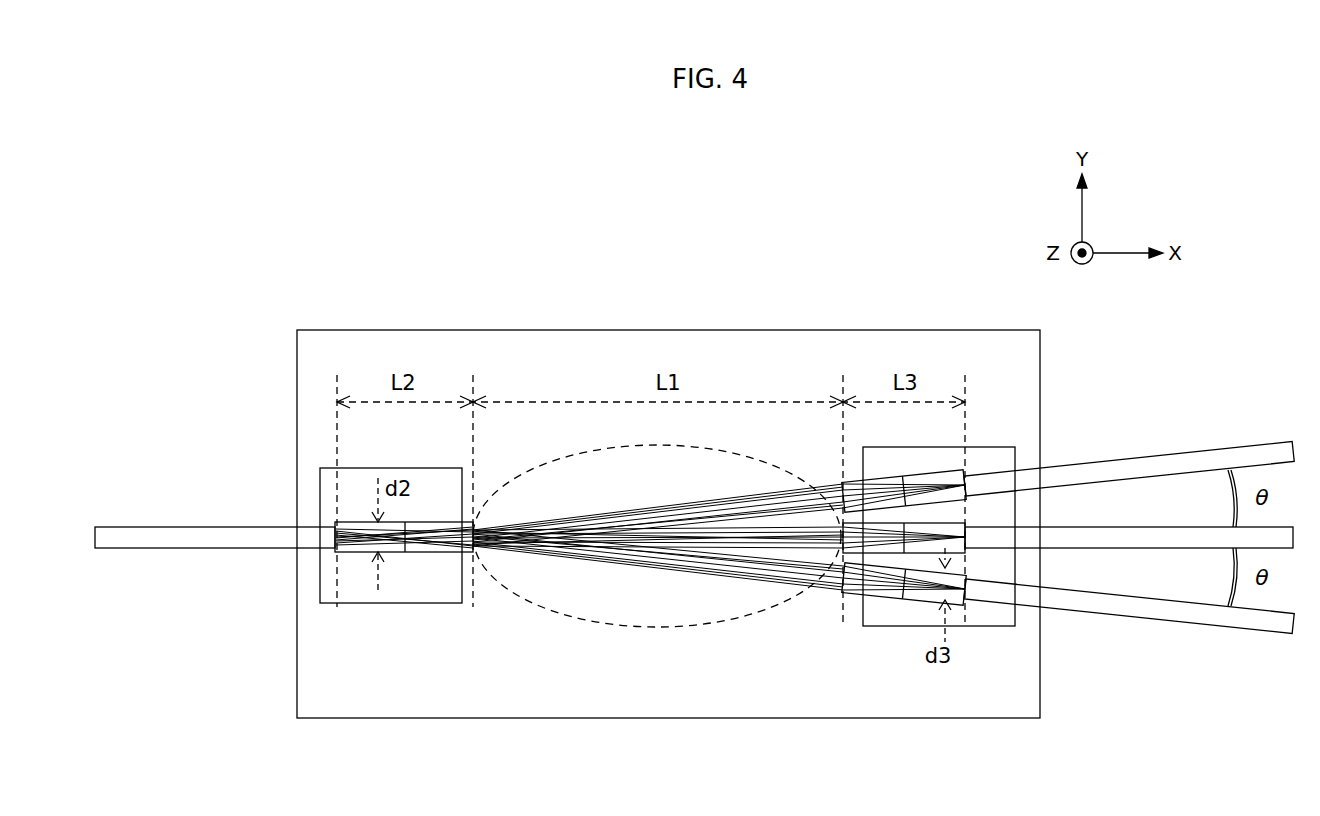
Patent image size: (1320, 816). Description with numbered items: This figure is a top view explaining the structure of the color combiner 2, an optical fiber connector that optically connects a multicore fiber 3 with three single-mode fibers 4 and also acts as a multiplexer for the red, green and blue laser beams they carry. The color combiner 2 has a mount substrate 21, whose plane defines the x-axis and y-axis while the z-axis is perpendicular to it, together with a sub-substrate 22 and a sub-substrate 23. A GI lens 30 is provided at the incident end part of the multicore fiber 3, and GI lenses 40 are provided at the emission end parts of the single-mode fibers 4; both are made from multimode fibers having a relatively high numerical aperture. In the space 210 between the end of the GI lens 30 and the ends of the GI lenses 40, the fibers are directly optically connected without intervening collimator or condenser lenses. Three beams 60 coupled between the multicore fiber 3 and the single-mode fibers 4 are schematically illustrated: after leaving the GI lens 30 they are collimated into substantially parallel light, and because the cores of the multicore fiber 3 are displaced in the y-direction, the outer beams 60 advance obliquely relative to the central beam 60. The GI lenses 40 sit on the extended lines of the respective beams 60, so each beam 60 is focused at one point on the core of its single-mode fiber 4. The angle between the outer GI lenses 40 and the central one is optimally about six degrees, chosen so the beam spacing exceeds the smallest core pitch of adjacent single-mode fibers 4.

The color combiner 2 is at (752, 258).
The multicore fiber 3 is at (163, 535).
The single-mode fibers 4 is at (1142, 466).
The mount substrate 21 is at (532, 329).
The sub-substrate 22 is at (444, 603).
The sub-substrate 23 is at (992, 628).
The GI lens 30 is at (449, 553).
The GI lenses 40 is at (878, 597).
The beams 60 is at (683, 568).
The space 210 is at (578, 622).